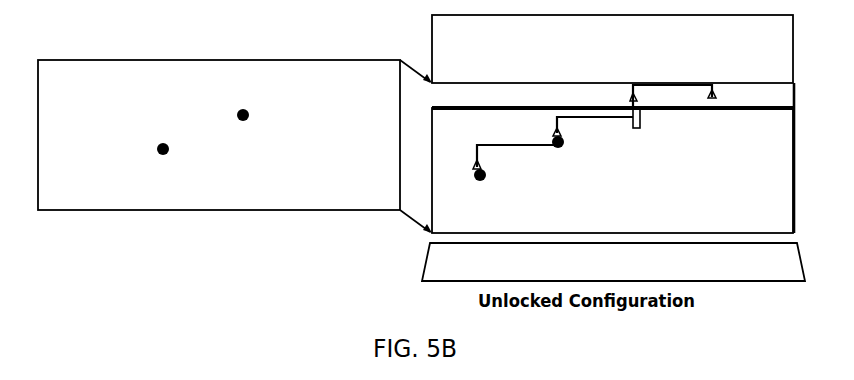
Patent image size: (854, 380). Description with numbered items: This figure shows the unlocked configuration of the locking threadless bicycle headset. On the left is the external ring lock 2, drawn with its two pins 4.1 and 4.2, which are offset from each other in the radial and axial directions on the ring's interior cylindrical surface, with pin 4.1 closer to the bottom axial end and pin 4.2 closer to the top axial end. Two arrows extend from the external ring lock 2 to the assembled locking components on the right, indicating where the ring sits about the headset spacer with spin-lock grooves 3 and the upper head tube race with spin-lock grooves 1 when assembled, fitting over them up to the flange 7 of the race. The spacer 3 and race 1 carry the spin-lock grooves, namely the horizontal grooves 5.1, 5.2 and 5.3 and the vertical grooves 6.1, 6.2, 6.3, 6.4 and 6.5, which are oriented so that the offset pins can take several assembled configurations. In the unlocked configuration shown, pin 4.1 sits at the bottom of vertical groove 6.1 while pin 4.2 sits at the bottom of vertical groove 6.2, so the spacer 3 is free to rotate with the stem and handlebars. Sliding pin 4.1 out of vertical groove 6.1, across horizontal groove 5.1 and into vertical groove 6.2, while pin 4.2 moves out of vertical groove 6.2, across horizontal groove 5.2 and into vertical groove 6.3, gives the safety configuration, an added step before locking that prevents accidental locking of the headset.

The upper head tube race with spin-lock grooves 1 is at (625, 159).
The external ring lock 2 is at (400, 145).
The headset spacer with spin-lock grooves 3 is at (625, 49).
The pin 4.1 is at (331, 166).
The pin 4.2 is at (419, 131).
The horizontal groove 5.1 is at (517, 147).
The horizontal groove 5.2 is at (595, 128).
The horizontal groove 5.3 is at (672, 87).
The vertical groove 6.1 is at (464, 179).
The vertical groove 6.2 is at (562, 151).
The vertical groove 6.3 is at (641, 134).
The vertical groove 6.4 is at (621, 91).
The vertical groove 6.5 is at (721, 114).
The flange 7 is at (613, 264).